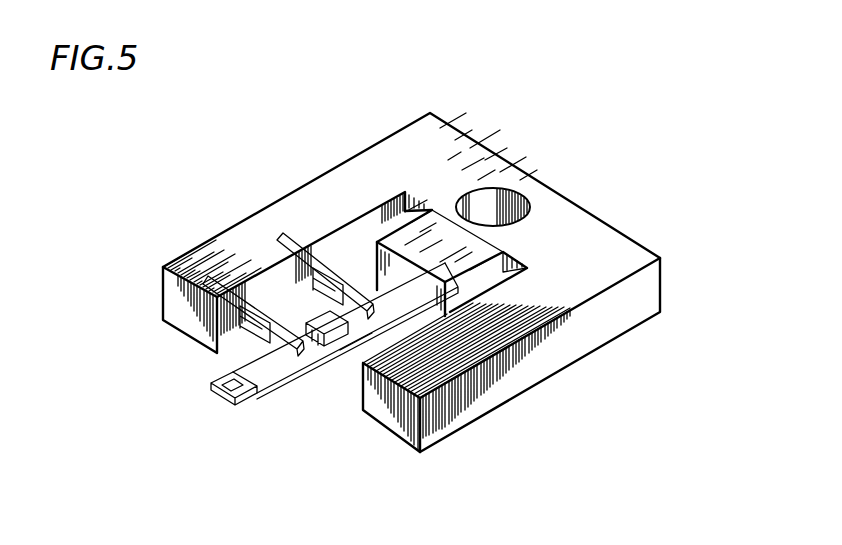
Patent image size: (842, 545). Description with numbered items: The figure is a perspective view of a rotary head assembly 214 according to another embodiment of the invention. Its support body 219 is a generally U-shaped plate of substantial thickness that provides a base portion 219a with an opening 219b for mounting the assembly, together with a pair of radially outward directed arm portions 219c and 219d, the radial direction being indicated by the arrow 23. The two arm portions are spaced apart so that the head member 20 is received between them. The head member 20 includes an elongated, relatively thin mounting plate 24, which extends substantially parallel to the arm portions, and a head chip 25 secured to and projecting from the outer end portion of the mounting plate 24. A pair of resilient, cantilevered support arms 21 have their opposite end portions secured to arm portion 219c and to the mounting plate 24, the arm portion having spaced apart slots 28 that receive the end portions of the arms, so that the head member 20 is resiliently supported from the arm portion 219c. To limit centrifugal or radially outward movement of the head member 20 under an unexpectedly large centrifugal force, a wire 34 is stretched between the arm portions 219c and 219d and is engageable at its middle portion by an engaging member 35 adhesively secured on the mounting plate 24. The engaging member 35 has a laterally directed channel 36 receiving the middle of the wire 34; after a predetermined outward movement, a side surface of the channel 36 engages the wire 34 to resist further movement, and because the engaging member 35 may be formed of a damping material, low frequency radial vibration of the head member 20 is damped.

The head member 20 is at (262, 416).
The resilient support arms 21 is at (342, 280).
The arrow indicating radial direction 23 is at (137, 462).
The mounting plate 24 is at (287, 378).
The head chip 25 is at (208, 385).
The slots 28 is at (294, 236).
The wire 34 is at (356, 347).
The engaging member 35 is at (333, 354).
The channel 36 is at (376, 289).
The rotary head assembly 214 is at (600, 196).
The support body 219 is at (622, 224).
The base portion 219a is at (631, 262).
The opening 219b is at (508, 192).
The arm portion 219c is at (262, 223).
The arm portion 219d is at (567, 348).